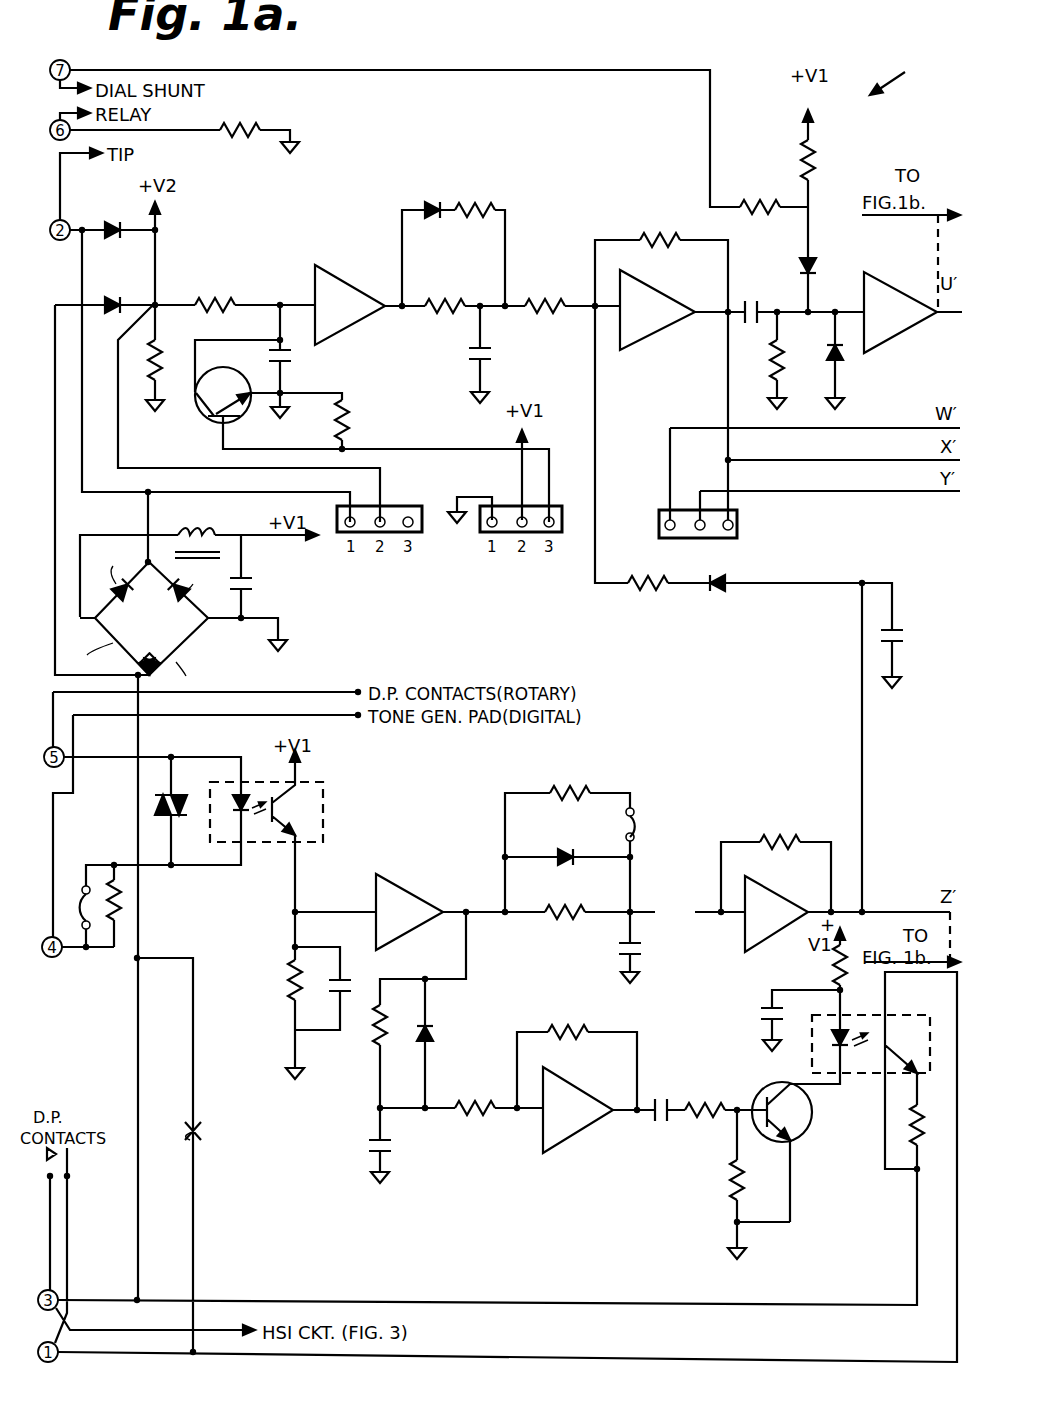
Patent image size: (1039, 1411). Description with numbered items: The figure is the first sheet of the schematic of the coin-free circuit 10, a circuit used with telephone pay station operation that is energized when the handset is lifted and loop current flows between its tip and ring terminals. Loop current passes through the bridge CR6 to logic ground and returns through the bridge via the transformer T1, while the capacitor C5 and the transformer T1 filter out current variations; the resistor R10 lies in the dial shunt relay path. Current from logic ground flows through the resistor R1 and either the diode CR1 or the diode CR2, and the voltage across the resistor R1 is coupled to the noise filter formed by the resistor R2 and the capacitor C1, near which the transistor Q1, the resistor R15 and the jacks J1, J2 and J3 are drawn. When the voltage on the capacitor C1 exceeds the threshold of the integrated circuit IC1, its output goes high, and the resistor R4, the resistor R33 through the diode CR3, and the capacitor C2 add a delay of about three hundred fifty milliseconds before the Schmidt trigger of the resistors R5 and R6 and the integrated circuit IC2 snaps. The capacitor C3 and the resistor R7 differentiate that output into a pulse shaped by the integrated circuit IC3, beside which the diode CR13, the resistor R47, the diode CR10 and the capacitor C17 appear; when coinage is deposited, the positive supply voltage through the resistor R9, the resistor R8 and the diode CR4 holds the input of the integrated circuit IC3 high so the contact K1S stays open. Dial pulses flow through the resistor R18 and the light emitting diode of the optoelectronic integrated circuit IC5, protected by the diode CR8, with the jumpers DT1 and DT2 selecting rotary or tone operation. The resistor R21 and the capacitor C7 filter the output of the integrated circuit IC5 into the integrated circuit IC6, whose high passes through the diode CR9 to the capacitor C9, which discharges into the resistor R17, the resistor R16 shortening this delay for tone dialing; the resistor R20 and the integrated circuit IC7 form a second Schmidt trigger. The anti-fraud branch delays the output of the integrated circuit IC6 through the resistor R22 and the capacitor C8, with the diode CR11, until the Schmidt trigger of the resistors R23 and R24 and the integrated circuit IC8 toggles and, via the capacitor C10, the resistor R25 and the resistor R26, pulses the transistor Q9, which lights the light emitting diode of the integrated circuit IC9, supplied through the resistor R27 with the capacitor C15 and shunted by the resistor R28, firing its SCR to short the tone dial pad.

The coin-free circuit 10 is at (946, 57).
The resistor R10 is at (248, 125).
The diode CR1 is at (120, 200).
The diode CR2 is at (135, 276).
The resistor R2 is at (213, 297).
The resistor R1 is at (157, 346).
The transistor Q1 is at (203, 415).
The capacitor C1 is at (283, 366).
The resistor R15 is at (347, 410).
The integrated circuit IC1 is at (350, 305).
The diode CR3 is at (462, 172).
The resistor R33 is at (472, 203).
The resistor R4 is at (440, 300).
The resistor R5 is at (540, 300).
The capacitor C2 is at (484, 363).
The integrated circuit IC2 is at (657, 310).
The resistor R6 is at (688, 220).
The resistor R9 is at (778, 186).
The resistor R8 is at (815, 178).
The diode CR4 is at (812, 258).
The capacitor C3 is at (750, 302).
The resistor R7 is at (775, 376).
The diode CR13 is at (838, 364).
The integrated circuit IC3 is at (900, 312).
The resistor R47 is at (648, 590).
The diode CR10 is at (722, 592).
The capacitor C17 is at (903, 615).
The jack J1 is at (562, 536).
The jack J2 is at (422, 536).
The jack J3 is at (737, 540).
The transformer T1 is at (190, 536).
The capacitor C5 is at (244, 582).
The bridge CR6 is at (162, 631).
The diode CR8 is at (176, 795).
The integrated circuit IC5 is at (323, 790).
The jumper DT2 is at (83, 886).
The resistor R18 is at (118, 930).
The capacitor C7 is at (326, 976).
The resistor R21 is at (290, 995).
The switch contact K1S is at (200, 1133).
The integrated circuit IC6 is at (409, 912).
The resistor R16 is at (562, 790).
The jumper DT1 is at (645, 814).
The diode CR9 is at (584, 836).
The resistor R17 is at (570, 918).
The capacitor C9 is at (635, 958).
The resistor R22 is at (380, 1050).
The diode CR11 is at (428, 1036).
The resistor R23 is at (495, 1091).
The resistor R24 is at (570, 1028).
The integrated circuit IC8 is at (578, 1110).
The capacitor C8 is at (385, 1160).
The capacitor C10 is at (662, 1098).
The resistor R25 is at (705, 1103).
The resistor R26 is at (734, 1195).
The transistor Q9 is at (800, 1138).
The resistor R20 is at (778, 836).
The integrated circuit IC7 is at (776, 914).
The resistor R27 is at (835, 965).
The capacitor C15 is at (760, 1008).
The integrated circuit IC9 is at (930, 1036).
The resistor R28 is at (912, 1112).